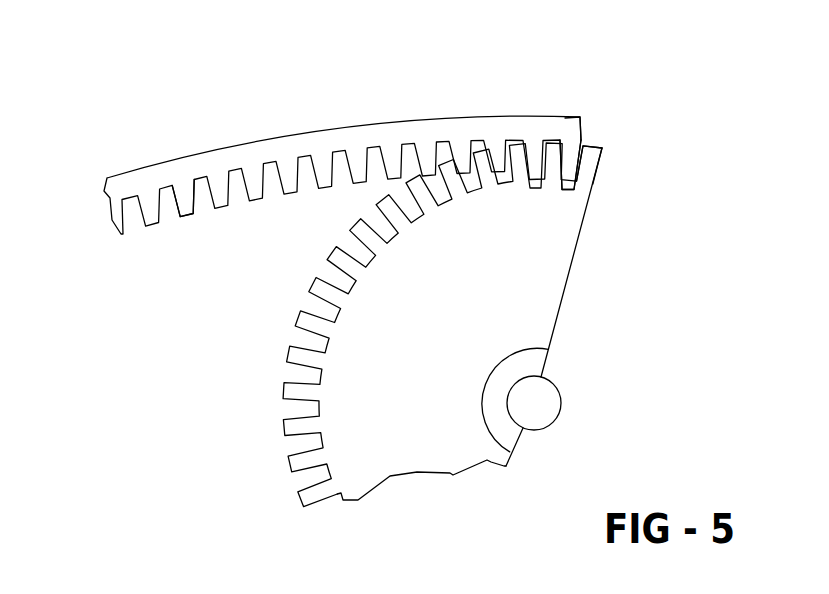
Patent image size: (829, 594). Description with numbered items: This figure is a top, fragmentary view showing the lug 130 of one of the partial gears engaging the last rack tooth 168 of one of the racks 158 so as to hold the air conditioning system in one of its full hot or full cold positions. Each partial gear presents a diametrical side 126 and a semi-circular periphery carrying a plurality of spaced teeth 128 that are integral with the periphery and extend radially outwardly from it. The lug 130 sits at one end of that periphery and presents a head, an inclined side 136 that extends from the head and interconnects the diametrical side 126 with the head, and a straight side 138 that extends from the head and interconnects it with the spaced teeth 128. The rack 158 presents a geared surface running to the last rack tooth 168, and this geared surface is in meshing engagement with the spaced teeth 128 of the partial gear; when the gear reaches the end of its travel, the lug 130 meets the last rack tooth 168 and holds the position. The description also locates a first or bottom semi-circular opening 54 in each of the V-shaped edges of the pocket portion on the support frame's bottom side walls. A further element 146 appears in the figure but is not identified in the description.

The rack 158 is at (286, 128).
The first or bottom semi-circular opening 54 is at (200, 213).
The straight side 138 is at (581, 143).
The last rack tooth 168 is at (583, 125).
The diametrical side 126 is at (467, 311).
The spaced teeth 128 is at (280, 387).
The inclined side 136 is at (602, 148).
The lug 130 is at (593, 153).
The pivot 146 is at (538, 359).